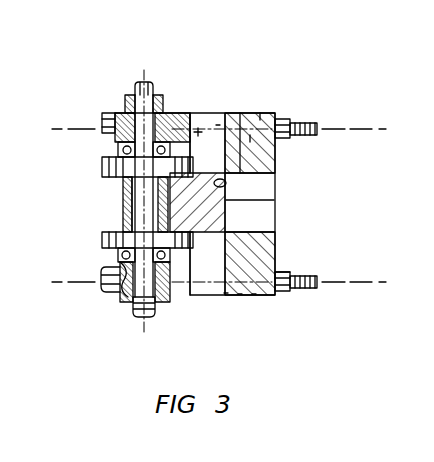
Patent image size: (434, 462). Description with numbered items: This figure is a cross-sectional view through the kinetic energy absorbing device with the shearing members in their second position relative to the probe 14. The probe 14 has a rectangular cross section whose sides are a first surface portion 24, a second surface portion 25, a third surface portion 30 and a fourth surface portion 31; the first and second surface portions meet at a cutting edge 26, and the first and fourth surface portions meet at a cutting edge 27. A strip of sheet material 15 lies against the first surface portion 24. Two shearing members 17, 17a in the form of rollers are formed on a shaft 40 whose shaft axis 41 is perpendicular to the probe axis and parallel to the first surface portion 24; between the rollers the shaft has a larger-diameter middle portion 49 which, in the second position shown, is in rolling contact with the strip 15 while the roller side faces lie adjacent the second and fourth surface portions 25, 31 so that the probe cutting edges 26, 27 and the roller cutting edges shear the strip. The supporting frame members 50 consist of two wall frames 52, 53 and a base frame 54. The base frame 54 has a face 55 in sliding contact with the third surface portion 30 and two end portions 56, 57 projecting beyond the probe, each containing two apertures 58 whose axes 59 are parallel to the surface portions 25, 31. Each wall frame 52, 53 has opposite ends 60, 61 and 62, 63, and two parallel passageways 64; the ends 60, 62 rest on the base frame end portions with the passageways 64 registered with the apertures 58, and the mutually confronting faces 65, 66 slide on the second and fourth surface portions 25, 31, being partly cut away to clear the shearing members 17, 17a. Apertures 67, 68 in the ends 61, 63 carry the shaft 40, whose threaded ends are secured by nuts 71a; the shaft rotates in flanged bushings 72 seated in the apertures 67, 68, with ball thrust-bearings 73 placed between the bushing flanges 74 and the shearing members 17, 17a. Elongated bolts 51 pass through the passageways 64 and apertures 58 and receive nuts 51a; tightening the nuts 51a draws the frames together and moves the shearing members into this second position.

The probe 14 is at (276, 214).
The strip of sheet material 15 is at (102, 160).
The shearing member 17 is at (101, 238).
The shearing member 17a is at (106, 156).
The first surface portion 24 is at (148, 180).
The second surface portion 25 is at (226, 294).
The cutting edge 26 is at (124, 233).
The cutting edge 27 is at (178, 140).
The third surface portion 30 is at (228, 195).
The fourth surface portion 31 is at (218, 125).
The shaft 40 is at (107, 197).
The shaft axis 41 is at (142, 82).
The middle portion 49 is at (122, 203).
The supporting frame members 50 is at (213, 104).
The bolts 51 is at (307, 289).
The nuts 51a is at (283, 273).
The wall frame 52 is at (205, 296).
The wall frame 53 is at (206, 170).
The base frame 54 is at (276, 250).
The face 55 is at (227, 183).
The end portion 56 is at (252, 296).
The end portion 57 is at (258, 122).
The apertures 58 is at (279, 114).
The axes 59 is at (346, 129).
The end 60 is at (240, 296).
The end 61 is at (110, 292).
The end 62 is at (244, 123).
The end 63 is at (113, 114).
The passageways 64 is at (217, 120).
The face 65 is at (244, 213).
The face 66 is at (250, 137).
The aperture 67 is at (118, 292).
The aperture 68 is at (152, 110).
The nuts 71a is at (130, 94).
The bushings 72 is at (160, 298).
The ball thrust-bearings 73 is at (165, 257).
The flange 74 is at (120, 259).